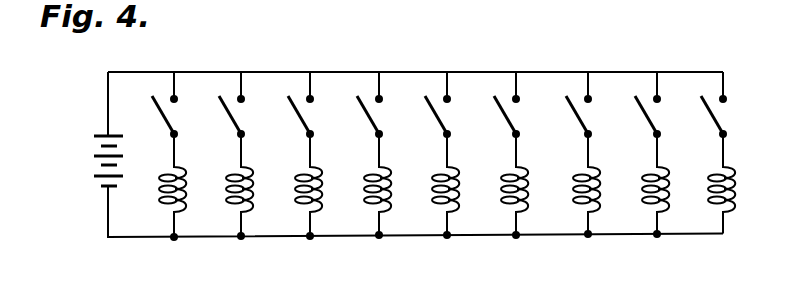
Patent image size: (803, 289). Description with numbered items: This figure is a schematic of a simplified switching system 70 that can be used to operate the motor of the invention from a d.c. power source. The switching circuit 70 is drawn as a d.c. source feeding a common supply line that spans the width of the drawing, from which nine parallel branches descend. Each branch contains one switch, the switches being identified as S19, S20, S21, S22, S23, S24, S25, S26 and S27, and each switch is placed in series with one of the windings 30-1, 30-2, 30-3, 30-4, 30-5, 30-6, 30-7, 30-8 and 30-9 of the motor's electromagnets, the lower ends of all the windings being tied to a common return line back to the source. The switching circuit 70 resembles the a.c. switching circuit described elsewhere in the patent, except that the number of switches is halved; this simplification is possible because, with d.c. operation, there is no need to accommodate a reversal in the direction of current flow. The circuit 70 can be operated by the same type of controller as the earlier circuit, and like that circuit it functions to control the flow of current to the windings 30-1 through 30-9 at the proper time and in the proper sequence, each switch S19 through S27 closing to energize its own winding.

The switching system 70 is at (353, 62).
The switch S19 is at (179, 104).
The switch S20 is at (246, 104).
The switch S21 is at (315, 104).
The switch S22 is at (384, 104).
The switch S23 is at (452, 104).
The switch S24 is at (521, 104).
The switch S25 is at (593, 104).
The switch S26 is at (662, 104).
The switch S27 is at (728, 104).
The winding 30-1 is at (163, 197).
The winding 30-2 is at (230, 197).
The winding 30-3 is at (299, 197).
The winding 30-4 is at (368, 197).
The winding 30-5 is at (436, 197).
The winding 30-6 is at (505, 197).
The winding 30-7 is at (577, 197).
The winding 30-8 is at (646, 197).
The winding 30-9 is at (712, 197).